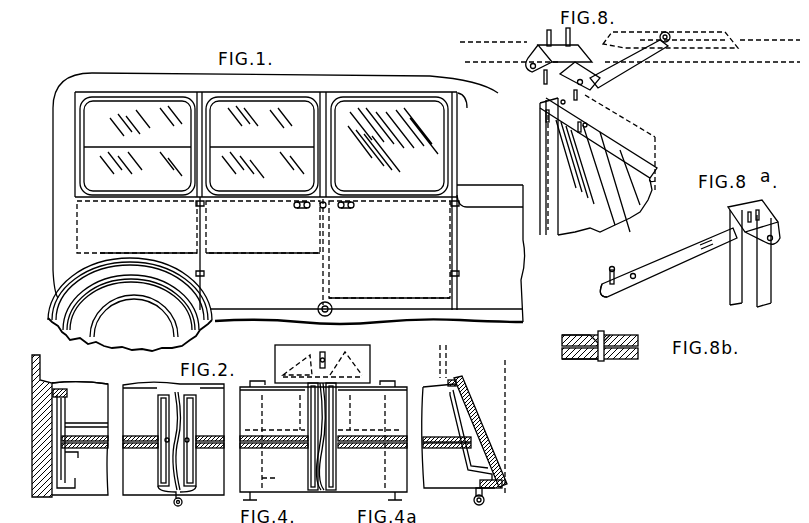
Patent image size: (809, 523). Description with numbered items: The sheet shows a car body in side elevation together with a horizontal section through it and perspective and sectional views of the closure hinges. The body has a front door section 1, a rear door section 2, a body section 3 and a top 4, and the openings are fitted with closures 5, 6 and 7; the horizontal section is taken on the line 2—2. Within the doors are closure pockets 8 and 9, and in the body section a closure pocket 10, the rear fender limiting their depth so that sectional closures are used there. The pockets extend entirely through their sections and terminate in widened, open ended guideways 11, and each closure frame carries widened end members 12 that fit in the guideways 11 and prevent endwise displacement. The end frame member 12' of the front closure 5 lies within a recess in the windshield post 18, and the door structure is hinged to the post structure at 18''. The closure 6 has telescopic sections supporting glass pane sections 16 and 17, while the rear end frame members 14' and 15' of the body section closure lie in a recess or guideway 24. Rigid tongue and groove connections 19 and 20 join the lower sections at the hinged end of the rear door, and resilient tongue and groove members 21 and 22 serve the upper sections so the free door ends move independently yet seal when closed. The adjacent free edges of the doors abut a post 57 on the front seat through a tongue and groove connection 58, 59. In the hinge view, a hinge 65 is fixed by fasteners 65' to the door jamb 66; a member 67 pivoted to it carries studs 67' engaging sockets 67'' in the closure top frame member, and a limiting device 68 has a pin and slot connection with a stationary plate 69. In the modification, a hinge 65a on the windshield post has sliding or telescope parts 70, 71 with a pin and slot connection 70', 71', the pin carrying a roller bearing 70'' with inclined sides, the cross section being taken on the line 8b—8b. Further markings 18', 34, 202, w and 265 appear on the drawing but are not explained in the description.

In FIG. 1, the front door section 1 is at (389, 249).
In FIG. 2, the front door section 1 is at (328, 440).
In FIG. 1, the rear door section 2 is at (24, 176).
In FIG. 2, the rear door section 2 is at (179, 438).
In FIG. 1, the body section 3 is at (137, 227).
In FIG. 2, the body section 3 is at (86, 397).
In FIG. 1, the top 4 is at (266, 137).
In FIG. 1, the closure 5 is at (389, 146).
In FIG. 1, the closure 6 is at (262, 146).
In FIG. 1, the closure 7 is at (137, 146).
In FIG. 1, the closure pocket 8 is at (345, 300).
In FIG. 2, the closure pocket 8 is at (445, 432).
In FIG. 1, the closure pocket 9 is at (226, 253).
In FIG. 2, the closure pocket 9 is at (275, 442).
In FIG. 1, the closure pocket 10 is at (160, 253).
In FIG. 2, the closure pocket 10 is at (86, 417).
In FIG. 2, the guideway 11 is at (306, 470).
In FIG. 2, the end member 12 is at (368, 442).
In FIG. 2, the end frame member 12' is at (458, 435).
In FIG. 2, the rear end frame member 14' is at (71, 396).
In FIG. 2, the rear end frame member 15' is at (77, 441).
In FIG. 2, the glass pane section 16 is at (98, 435).
In FIG. 2, the glass pane section 17 is at (93, 448).
In FIG. 2, the windshield post 18 is at (464, 432).
In FIG. 8A, the windshield post 18 is at (763, 258).
In FIG. 2, the post end fittings 18' is at (460, 440).
In FIG. 2, the hinge point 18'' is at (460, 499).
In FIG. 2, the rigid tongue and groove connection 19 is at (160, 422).
In FIG. 2, the rigid tongue and groove connection 20 is at (196, 414).
In FIG. 2, the resilient tongue and groove member 21 is at (160, 432).
In FIG. 2, the resilient tongue and groove member 22 is at (200, 434).
In FIG. 2, the recess or guideway 24 is at (37, 451).
In FIG. 2, the hinge pivot 34 is at (188, 504).
In FIG. 2, the post 57 is at (362, 382).
In FIG. 2, the tongue and groove connection 58 is at (334, 393).
In FIG. 2, the tongue and groove connection 59 is at (323, 363).
In FIG. 8, the hinge 65 is at (543, 58).
In FIG. 8, the fasteners 65' is at (542, 31).
In FIG. 8A, the hinge 65a is at (770, 225).
In FIG. 8, the door jamb 66 is at (702, 51).
In FIG. 8, the member 67 is at (580, 66).
In FIG. 8, the studs 67' is at (538, 85).
In FIG. 8, the sockets 67'' is at (578, 165).
In FIG. 8, the limiting device 68 is at (636, 70).
In FIG. 8, the stationary plate 69 is at (712, 40).
In FIG. 8A, the sliding or telescope part 70 is at (630, 293).
In FIG. 8B, the sliding or telescope part 70 is at (600, 368).
In FIG. 8B, the pin 70' is at (579, 373).
In FIG. 8B, the roller bearing 70'' is at (603, 339).
In FIG. 8A, the sliding or telescope part 71 is at (611, 265).
In FIG. 8B, the sliding or telescope part 71 is at (612, 345).
In FIG. 8B, the slot 71' is at (572, 328).
In FIG. 8A, the section line 8b is at (680, 278).
In FIG. 2, the guide line 202 is at (456, 382).
In FIG. 2, the width reference w is at (455, 356).
In FIG. 1, the pivot fitting 265 is at (318, 307).